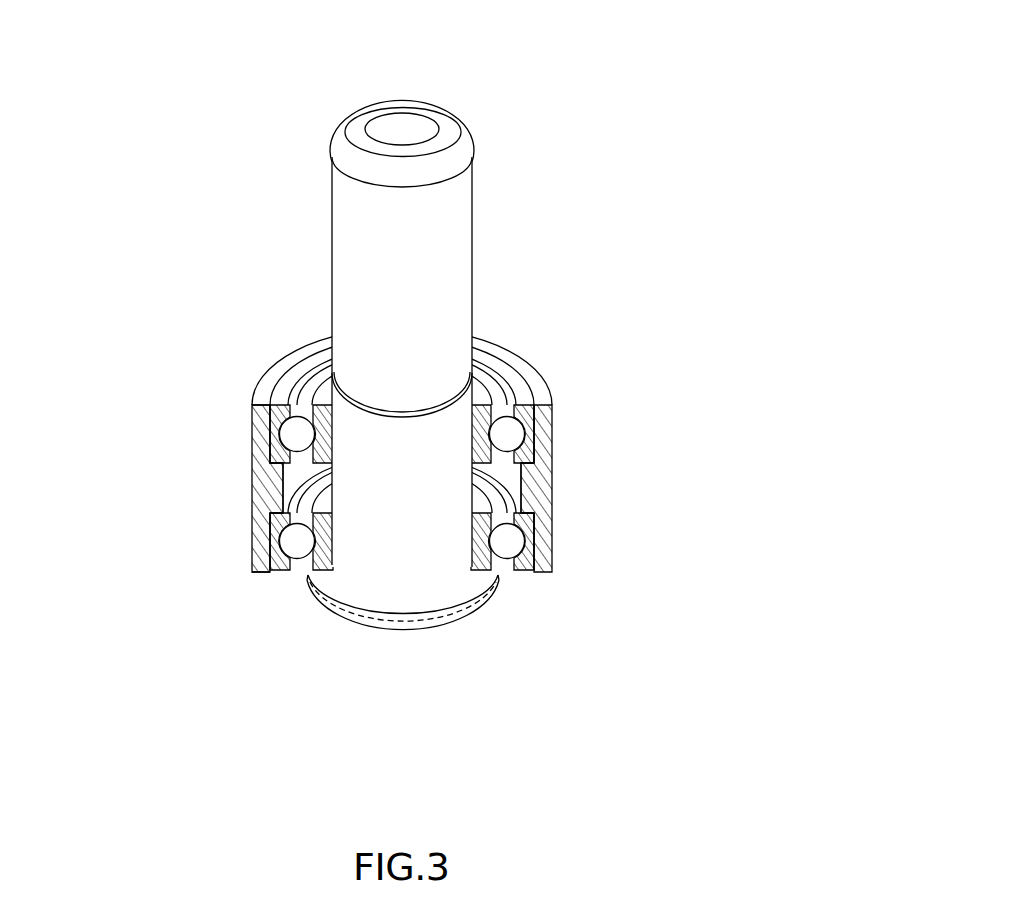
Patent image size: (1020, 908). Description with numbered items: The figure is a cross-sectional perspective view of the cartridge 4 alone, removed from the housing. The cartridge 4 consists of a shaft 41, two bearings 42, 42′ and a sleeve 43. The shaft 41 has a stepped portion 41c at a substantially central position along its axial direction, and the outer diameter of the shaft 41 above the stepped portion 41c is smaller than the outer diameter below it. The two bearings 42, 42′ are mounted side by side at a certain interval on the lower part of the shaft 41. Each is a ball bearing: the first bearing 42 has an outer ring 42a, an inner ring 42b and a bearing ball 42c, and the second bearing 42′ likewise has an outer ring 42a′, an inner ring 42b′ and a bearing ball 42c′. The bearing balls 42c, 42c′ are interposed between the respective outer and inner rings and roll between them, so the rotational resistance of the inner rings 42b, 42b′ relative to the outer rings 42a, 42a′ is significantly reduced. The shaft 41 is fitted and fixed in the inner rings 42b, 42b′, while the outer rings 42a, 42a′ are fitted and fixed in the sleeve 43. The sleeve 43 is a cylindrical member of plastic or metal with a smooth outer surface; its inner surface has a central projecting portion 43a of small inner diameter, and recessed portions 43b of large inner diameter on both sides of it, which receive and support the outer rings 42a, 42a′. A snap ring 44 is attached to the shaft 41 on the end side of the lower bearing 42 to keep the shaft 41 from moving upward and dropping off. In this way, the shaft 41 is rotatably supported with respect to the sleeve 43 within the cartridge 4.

The cartridge 4 is at (580, 117).
The shaft 41 is at (450, 198).
The stepped portion 41c is at (435, 407).
The bearing 42 is at (380, 690).
The outer ring 42a is at (283, 563).
The inner ring 42b is at (319, 565).
The bearing ball 42c is at (300, 550).
The bearing 42′ is at (285, 394).
The outer ring 42a′ is at (540, 445).
The inner ring 42b′ is at (490, 407).
The bearing ball 42c′ is at (507, 433).
The sleeve 43 is at (543, 543).
The projecting portion 43a is at (280, 476).
The recessed portions 43b is at (272, 396).
The snap ring 44 is at (463, 617).